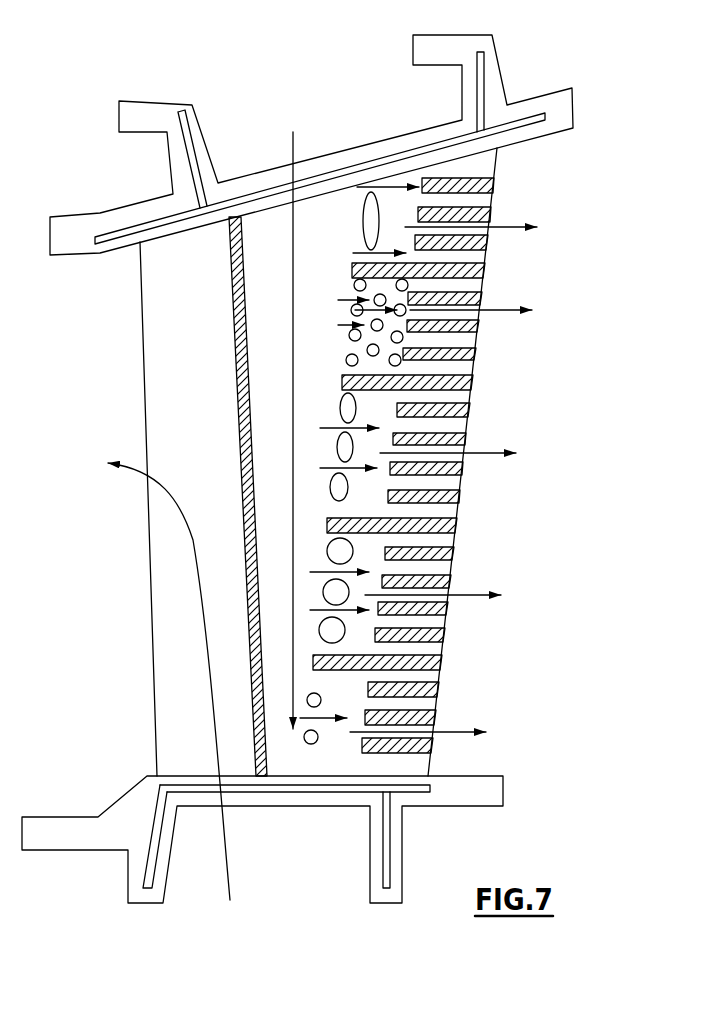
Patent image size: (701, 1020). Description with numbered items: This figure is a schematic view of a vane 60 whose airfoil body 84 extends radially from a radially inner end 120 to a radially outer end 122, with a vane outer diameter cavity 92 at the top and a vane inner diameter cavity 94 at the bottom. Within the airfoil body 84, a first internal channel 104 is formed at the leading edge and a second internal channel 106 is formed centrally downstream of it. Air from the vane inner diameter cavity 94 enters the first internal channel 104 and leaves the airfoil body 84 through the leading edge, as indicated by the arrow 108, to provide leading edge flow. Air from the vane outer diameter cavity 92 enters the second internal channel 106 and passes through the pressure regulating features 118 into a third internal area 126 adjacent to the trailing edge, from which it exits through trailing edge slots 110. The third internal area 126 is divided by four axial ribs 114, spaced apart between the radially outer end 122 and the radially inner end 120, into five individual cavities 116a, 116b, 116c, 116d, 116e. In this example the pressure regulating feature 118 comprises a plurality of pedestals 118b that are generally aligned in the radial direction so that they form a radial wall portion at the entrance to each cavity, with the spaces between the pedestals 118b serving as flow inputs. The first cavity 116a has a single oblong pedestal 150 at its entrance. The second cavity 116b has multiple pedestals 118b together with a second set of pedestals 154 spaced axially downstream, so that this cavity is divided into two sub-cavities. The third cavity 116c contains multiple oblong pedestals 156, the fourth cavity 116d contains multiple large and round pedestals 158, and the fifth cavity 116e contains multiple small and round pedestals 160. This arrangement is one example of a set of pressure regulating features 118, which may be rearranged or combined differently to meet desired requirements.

The vane 60 is at (606, 101).
The airfoil body 84 is at (162, 602).
The vane outer diameter cavity 92 is at (440, 98).
The vane inner diameter cavity 94 is at (350, 865).
The first internal channel 104 is at (157, 330).
The second internal channel 106 is at (262, 238).
The arrow 108 is at (230, 863).
The slots 110 is at (480, 198).
The axial ribs 114 is at (492, 268).
The first cavity 116a is at (500, 150).
The second cavity 116b is at (415, 283).
The third cavity 116c is at (368, 403).
The fourth cavity 116d is at (365, 542).
The fifth cavity 116e is at (347, 682).
The pressure regulating features 118 is at (350, 211).
The pedestals 118b is at (140, 312).
The radially inner end 120 is at (175, 753).
The radially outer end 122 is at (140, 258).
The third internal area 126 is at (389, 177).
The single oblong pedestal 150 is at (369, 210).
The second set of pedestals 154 is at (404, 348).
The oblong pedestals 156 is at (351, 485).
The large and round pedestals 158 is at (343, 555).
The small and round pedestals 160 is at (323, 700).